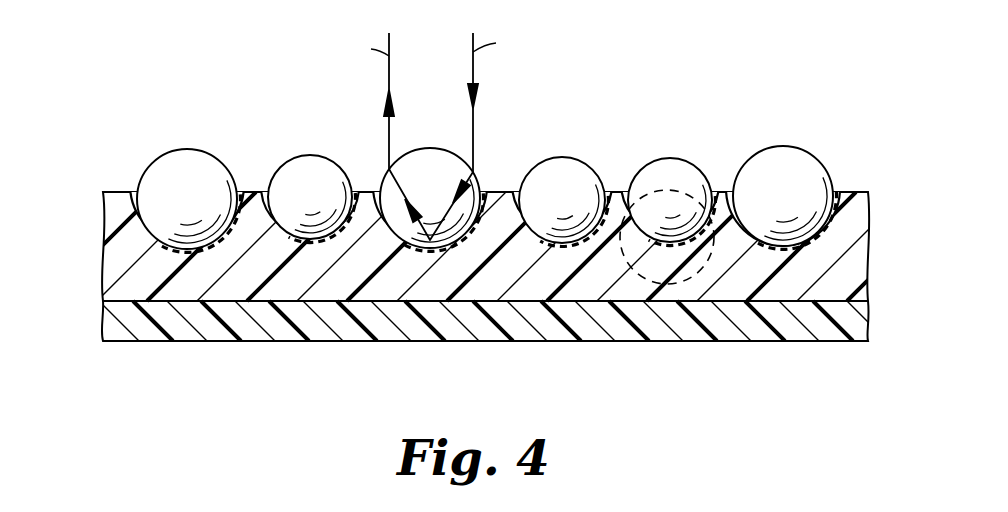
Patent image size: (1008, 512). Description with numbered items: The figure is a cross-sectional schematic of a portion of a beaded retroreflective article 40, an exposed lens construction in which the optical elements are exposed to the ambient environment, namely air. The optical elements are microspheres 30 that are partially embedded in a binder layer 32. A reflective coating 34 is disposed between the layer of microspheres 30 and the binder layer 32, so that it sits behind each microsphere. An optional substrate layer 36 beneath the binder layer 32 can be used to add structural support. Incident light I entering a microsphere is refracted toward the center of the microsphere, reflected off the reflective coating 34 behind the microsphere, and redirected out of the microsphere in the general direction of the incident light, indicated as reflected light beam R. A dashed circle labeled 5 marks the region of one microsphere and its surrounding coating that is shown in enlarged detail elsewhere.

The microspheres 30 is at (278, 180).
The binder layer 32 is at (117, 255).
The reflective coating 34 is at (852, 206).
The substrate layer 36 is at (217, 328).
The beaded retroreflective article 40 is at (499, 221).
The detail region shown in FIG. 5 is at (654, 190).